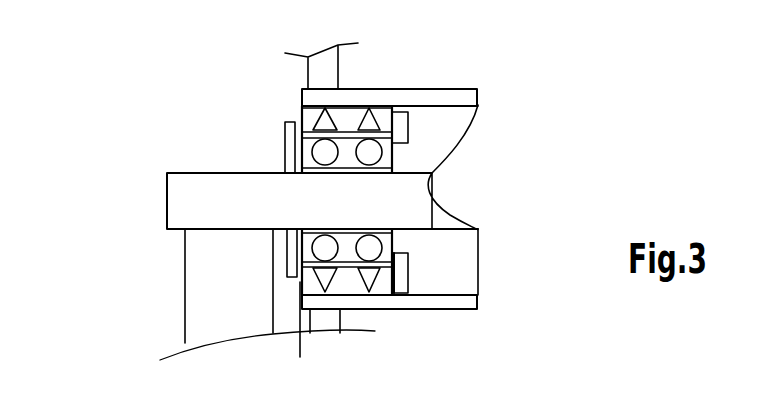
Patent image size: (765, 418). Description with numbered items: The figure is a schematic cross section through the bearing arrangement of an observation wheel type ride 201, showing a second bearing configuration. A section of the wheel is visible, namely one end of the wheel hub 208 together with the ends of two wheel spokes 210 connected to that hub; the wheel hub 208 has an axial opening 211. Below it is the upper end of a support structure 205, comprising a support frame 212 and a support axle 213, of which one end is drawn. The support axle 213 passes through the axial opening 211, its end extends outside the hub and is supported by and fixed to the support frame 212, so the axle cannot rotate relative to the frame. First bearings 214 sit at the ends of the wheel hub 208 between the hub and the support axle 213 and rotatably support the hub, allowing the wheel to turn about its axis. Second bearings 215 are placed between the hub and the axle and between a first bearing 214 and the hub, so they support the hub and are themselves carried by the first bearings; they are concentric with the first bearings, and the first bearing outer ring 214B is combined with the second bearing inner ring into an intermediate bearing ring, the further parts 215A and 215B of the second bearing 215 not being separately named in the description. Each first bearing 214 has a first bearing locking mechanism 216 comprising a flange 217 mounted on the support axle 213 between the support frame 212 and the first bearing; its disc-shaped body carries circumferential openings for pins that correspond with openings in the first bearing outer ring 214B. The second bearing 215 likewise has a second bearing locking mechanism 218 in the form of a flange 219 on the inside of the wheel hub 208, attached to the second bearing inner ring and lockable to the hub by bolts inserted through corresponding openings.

The observation wheel type ride 201 is at (568, 55).
The support structure 205 is at (120, 295).
The wheel hub 208 is at (453, 88).
The wheel spokes 210 is at (338, 75).
The axial opening 211 is at (455, 119).
The support frame 212 is at (197, 317).
The support axle 213 is at (178, 202).
The first bearings 214 is at (415, 158).
The first bearing outer ring 214B is at (400, 127).
The second bearings 215 is at (288, 110).
The bearing seal 215A is at (286, 135).
The bearing outer race 215B is at (303, 102).
The first bearing locking mechanism 216 is at (278, 256).
The flange 217 is at (301, 338).
The second bearing locking mechanism 218 is at (422, 263).
The flange 219 is at (408, 295).